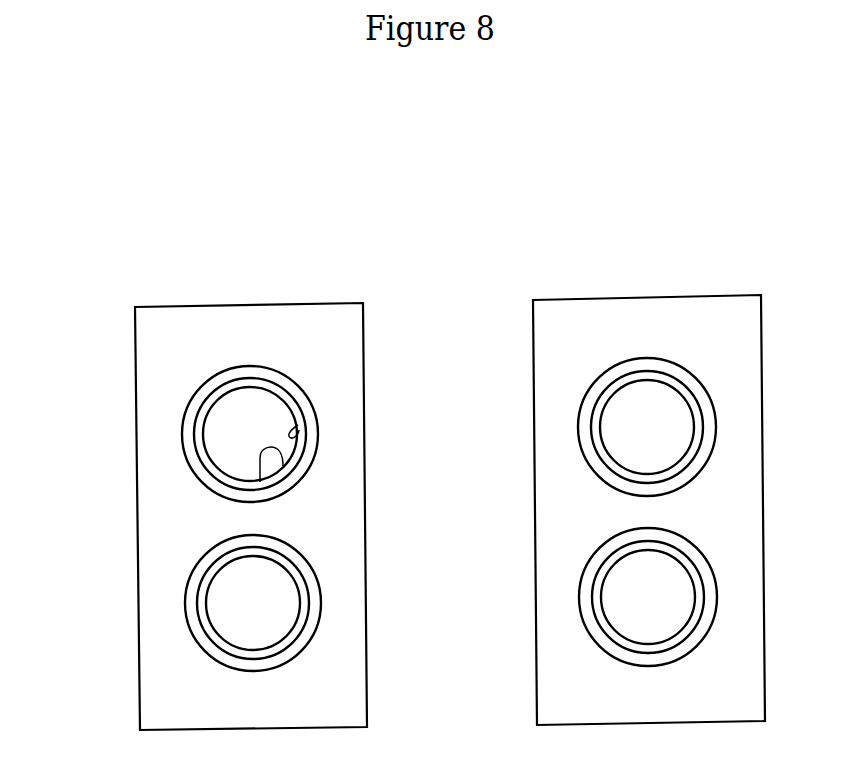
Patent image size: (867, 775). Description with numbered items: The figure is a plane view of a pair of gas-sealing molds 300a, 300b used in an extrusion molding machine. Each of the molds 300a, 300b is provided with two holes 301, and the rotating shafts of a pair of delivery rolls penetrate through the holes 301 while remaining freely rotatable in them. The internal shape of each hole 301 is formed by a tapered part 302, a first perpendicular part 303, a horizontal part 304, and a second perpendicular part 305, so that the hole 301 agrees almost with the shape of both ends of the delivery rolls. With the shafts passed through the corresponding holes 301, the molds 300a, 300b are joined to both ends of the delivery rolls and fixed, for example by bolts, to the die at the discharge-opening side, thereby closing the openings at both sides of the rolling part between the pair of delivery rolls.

The gas-sealing mold 300a is at (252, 318).
The gas-sealing mold 300b is at (648, 312).
The hole 301 is at (183, 424).
The tapered part 302 is at (297, 393).
The first perpendicular part 303 is at (298, 425).
The horizontal part 304 is at (296, 450).
The second perpendicular part 305 is at (283, 466).